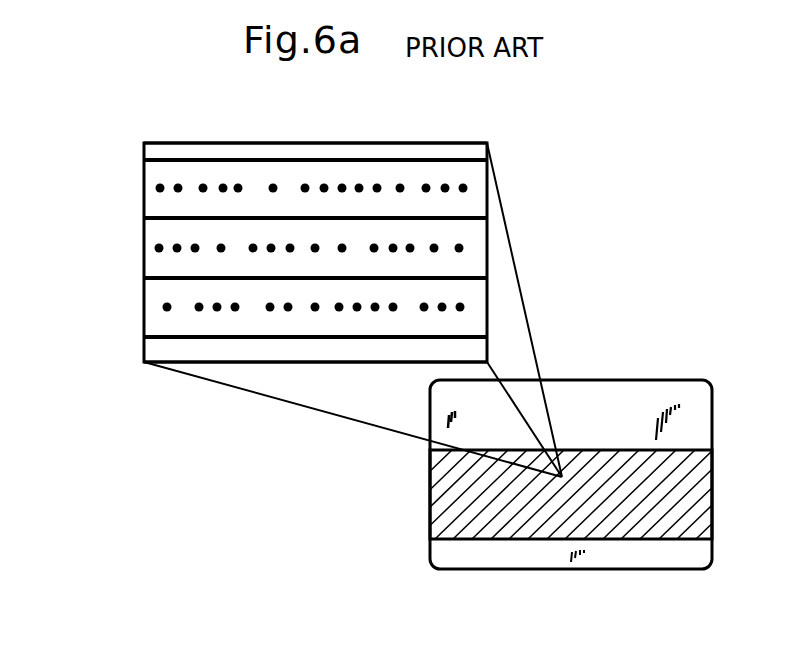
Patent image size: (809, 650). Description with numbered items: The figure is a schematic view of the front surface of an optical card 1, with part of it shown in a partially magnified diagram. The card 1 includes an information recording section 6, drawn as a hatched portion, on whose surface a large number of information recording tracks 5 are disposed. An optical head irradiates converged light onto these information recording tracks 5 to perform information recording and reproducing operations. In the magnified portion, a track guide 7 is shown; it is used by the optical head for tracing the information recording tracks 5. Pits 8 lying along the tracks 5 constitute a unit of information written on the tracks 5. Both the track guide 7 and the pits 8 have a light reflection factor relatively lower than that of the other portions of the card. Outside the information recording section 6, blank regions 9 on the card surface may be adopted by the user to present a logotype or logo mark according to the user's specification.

The optical card 1 is at (724, 278).
The information recording tracks 5 is at (157, 232).
The information recording section 6 is at (700, 514).
The track guide 7 is at (144, 160).
The pits 8 is at (305, 186).
The blank regions 9 is at (705, 423).